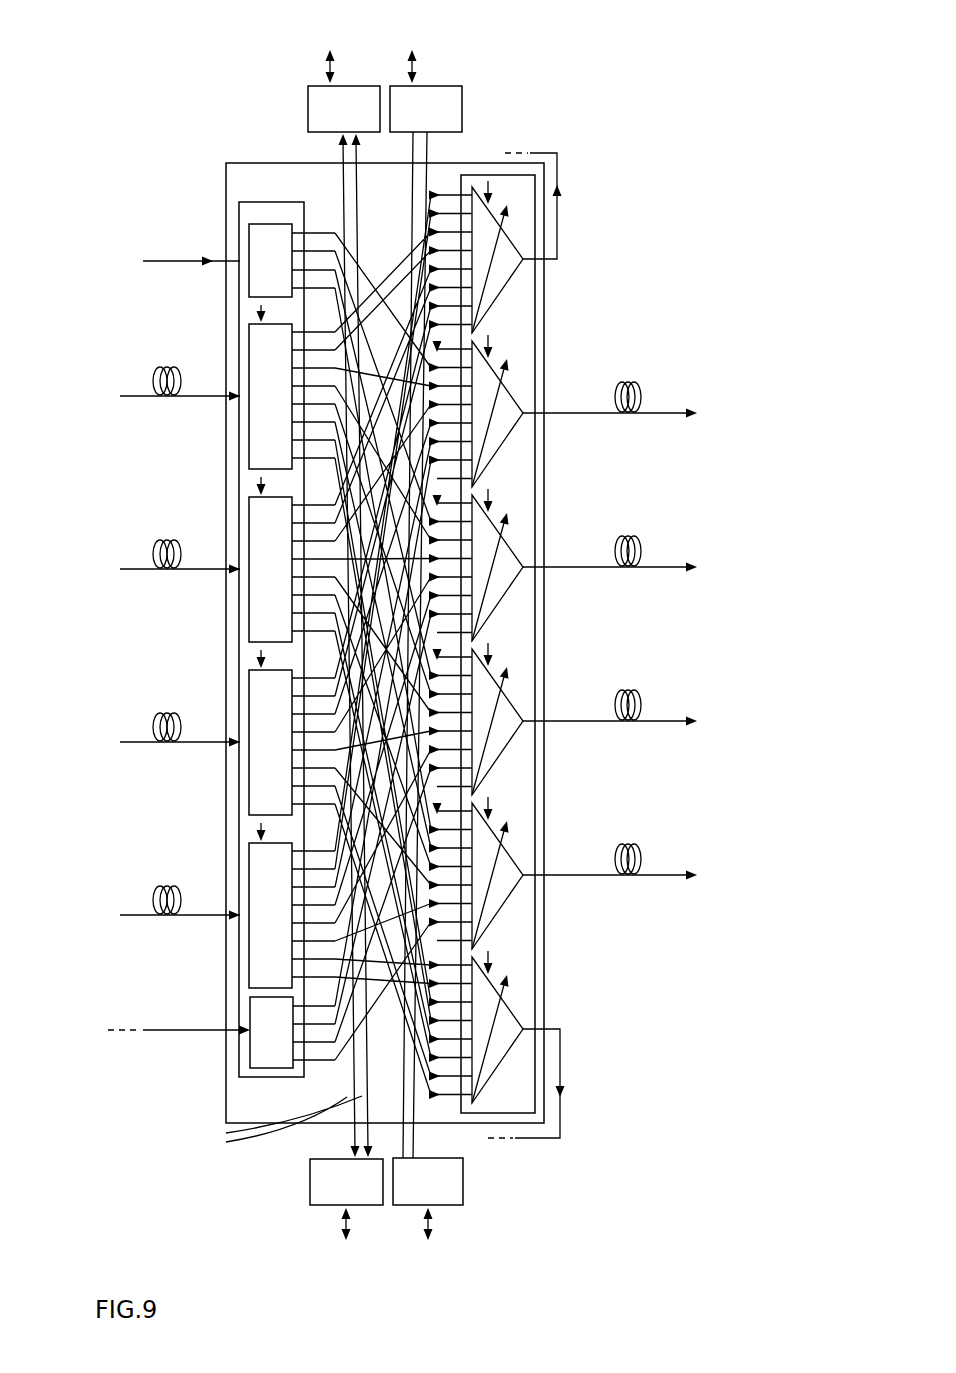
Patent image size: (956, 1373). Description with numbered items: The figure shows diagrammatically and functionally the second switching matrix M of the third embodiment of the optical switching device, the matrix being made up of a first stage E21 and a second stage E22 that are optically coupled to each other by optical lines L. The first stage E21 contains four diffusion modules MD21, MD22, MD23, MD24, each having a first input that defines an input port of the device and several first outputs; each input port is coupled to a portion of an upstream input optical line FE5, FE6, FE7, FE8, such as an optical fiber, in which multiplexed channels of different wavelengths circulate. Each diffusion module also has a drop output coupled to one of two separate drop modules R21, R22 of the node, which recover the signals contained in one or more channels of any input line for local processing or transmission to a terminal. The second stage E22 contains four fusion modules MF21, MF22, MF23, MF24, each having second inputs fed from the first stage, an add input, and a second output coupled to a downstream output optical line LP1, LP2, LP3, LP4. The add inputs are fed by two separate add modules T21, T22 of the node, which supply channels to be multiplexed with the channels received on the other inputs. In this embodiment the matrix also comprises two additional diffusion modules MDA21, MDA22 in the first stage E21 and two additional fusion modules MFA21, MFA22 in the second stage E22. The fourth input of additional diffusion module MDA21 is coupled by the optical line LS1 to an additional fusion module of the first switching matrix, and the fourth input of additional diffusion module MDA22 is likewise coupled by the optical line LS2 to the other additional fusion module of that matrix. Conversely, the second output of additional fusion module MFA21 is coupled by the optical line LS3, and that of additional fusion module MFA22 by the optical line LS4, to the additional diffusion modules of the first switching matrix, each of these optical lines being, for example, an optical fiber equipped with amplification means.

The switching matrix M is at (225, 200).
The first stage E21 is at (238, 235).
The second stage E22 is at (472, 187).
The additional diffusion module MDA21 is at (268, 224).
The additional diffusion module MDA22 is at (248, 1053).
The diffusion module MD21 is at (250, 342).
The diffusion module MD22 is at (249, 516).
The diffusion module MD23 is at (249, 690).
The diffusion module MD24 is at (249, 862).
The additional fusion module MFA21 is at (508, 279).
The additional fusion module MFA22 is at (518, 1020).
The fusion module MF21 is at (510, 393).
The fusion module MF22 is at (510, 547).
The fusion module MF23 is at (510, 701).
The fusion module MF24 is at (510, 855).
The optical line LS1 is at (157, 262).
The optical line LS2 is at (180, 1028).
The optical line LS3 is at (562, 165).
The optical line LS4 is at (561, 1121).
The input optical line FE5 is at (178, 401).
The input optical line FE6 is at (178, 574).
The input optical line FE7 is at (178, 747).
The input optical line FE8 is at (178, 920).
The output optical line LP1 is at (660, 418).
The output optical line LP2 is at (660, 572).
The output optical line LP3 is at (660, 726).
The output optical line LP4 is at (660, 880).
The drop module R21 is at (358, 86).
The drop module R22 is at (310, 1192).
The add module T21 is at (438, 86).
The add module T22 is at (463, 1180).
The optical lines L is at (276, 1136).